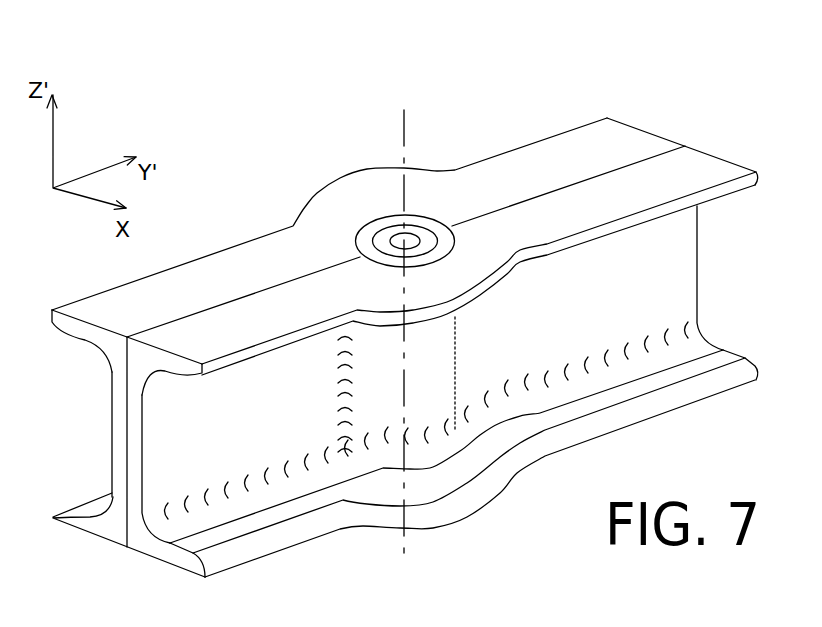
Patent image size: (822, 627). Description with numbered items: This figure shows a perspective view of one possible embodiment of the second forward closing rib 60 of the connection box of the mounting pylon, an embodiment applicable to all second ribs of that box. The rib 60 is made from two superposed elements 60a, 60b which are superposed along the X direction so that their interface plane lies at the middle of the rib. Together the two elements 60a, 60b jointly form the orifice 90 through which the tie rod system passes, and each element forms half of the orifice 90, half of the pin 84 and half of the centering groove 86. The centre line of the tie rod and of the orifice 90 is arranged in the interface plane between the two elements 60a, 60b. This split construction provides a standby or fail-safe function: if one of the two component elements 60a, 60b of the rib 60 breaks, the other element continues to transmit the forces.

The second forward closing rib 60 is at (555, 110).
The superposed element 60a is at (628, 143).
The superposed element 60b is at (693, 173).
The pin 84 is at (440, 250).
The centering groove 86 is at (363, 238).
The orifice 90 is at (403, 232).